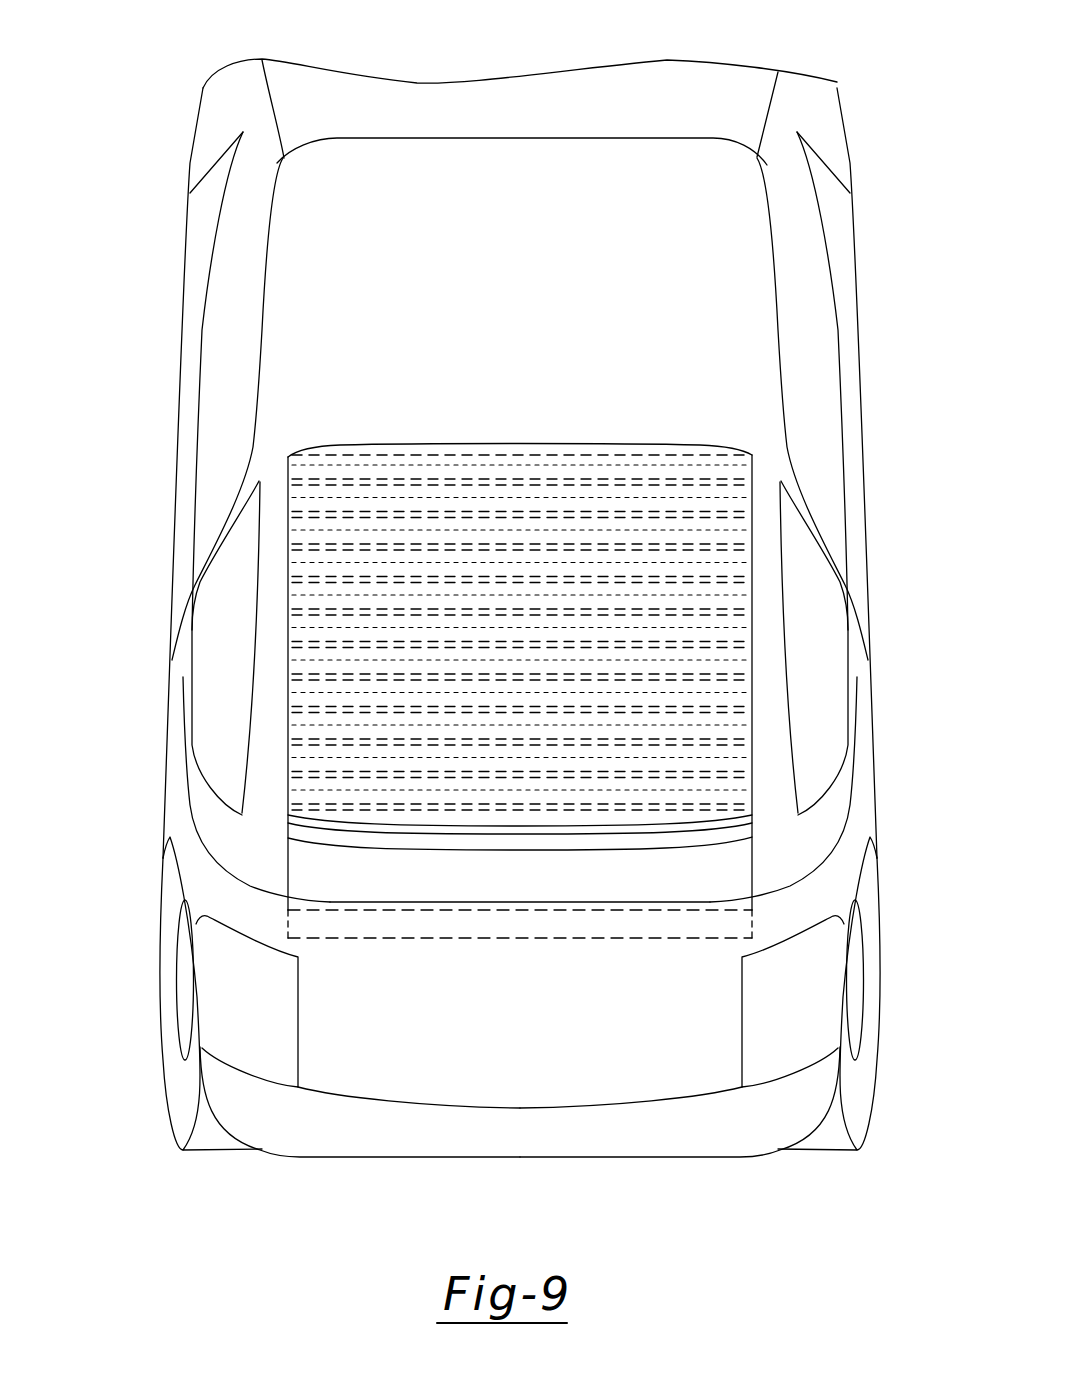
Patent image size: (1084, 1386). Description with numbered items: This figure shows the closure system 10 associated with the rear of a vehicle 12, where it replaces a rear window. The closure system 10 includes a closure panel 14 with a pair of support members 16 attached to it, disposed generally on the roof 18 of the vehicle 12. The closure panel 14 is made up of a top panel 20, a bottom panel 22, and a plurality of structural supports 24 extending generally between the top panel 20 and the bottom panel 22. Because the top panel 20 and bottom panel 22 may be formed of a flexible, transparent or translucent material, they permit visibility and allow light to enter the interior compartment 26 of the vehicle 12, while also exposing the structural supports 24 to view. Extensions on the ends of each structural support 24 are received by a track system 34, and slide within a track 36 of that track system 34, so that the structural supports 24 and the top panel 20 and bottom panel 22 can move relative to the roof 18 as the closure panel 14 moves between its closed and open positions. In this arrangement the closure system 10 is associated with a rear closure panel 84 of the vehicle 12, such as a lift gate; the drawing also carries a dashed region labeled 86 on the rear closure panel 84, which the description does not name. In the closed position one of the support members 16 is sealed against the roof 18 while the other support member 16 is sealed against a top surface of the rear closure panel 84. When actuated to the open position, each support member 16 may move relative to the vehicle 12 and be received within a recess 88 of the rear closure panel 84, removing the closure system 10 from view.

The closure system 10 is at (678, 503).
The vehicle 12 is at (150, 95).
The closure panel 14 is at (300, 613).
The support members 16 is at (598, 447).
The roof 18 is at (442, 155).
The top panel 20 is at (713, 656).
The bottom panel 22 is at (718, 735).
The structural supports 24 is at (732, 683).
The interior compartment 26 is at (318, 870).
The track system 34 is at (285, 637).
The track 36 is at (288, 740).
The rear closure panel 84 is at (683, 1055).
The lower air opening 86 is at (432, 930).
The recess 88 is at (558, 1050).